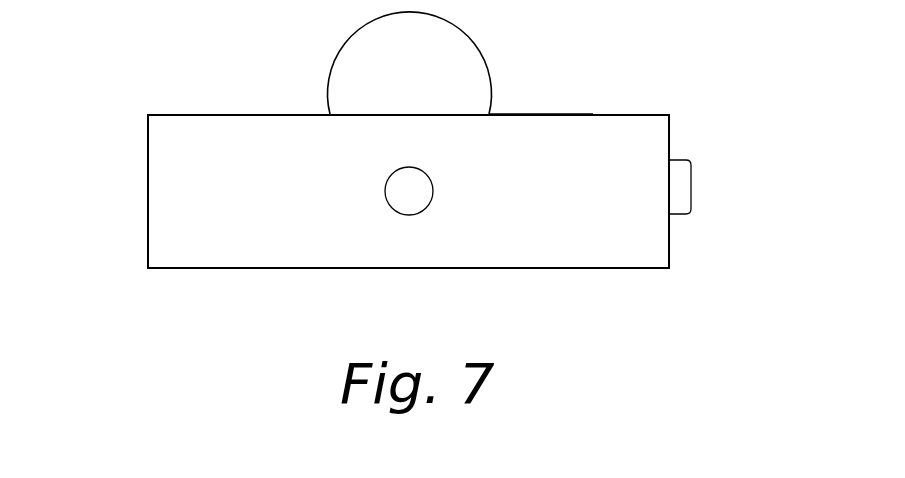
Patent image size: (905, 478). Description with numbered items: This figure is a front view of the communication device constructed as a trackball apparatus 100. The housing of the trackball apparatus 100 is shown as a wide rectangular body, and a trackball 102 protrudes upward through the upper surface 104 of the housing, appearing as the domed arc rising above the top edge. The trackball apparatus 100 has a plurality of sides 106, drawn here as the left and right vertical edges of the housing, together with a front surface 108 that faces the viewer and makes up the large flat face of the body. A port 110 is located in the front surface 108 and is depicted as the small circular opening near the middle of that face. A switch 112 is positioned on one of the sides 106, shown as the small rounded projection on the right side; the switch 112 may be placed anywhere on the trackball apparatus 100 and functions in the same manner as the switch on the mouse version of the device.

The trackball apparatus 100 is at (175, 137).
The trackball 102 is at (452, 78).
The upper surface 104 is at (593, 114).
The sides 106 is at (148, 222).
The front surface 108 is at (515, 232).
The port 110 is at (398, 197).
The switch 112 is at (683, 183).